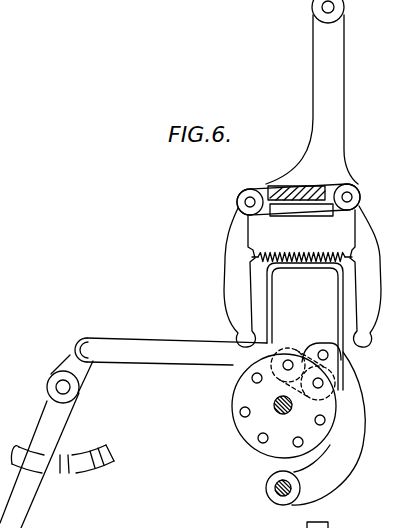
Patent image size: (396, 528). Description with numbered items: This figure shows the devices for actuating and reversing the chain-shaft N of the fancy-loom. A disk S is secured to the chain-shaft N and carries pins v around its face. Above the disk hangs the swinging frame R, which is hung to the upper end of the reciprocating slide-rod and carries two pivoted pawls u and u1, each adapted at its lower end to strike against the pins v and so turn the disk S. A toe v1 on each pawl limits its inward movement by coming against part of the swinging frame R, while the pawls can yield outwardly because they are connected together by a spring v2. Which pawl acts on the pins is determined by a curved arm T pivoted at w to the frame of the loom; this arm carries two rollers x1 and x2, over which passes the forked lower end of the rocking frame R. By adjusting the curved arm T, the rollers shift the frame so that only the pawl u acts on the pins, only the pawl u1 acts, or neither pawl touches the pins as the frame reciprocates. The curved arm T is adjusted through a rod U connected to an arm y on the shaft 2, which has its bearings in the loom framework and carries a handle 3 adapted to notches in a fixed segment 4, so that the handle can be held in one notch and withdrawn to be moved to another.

The swinging frame R is at (312, 92).
The pawl u is at (250, 255).
The pawl u1 is at (355, 258).
The toe v1 is at (270, 212).
The spring v2 is at (302, 322).
The rod U is at (171, 345).
The arm y is at (72, 360).
The shaft 2 is at (56, 387).
The handle 3 is at (27, 502).
The fixed segment 4 is at (68, 456).
The disk S is at (234, 395).
The chain-shaft N is at (283, 415).
The pins v is at (250, 412).
The roller x1 is at (332, 343).
The roller x2 is at (303, 374).
The curved arm T is at (328, 428).
The pivot w is at (267, 490).